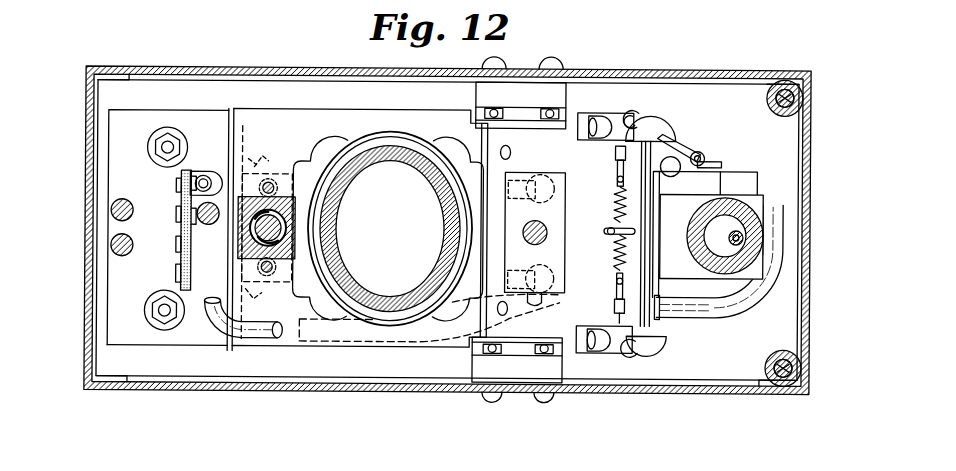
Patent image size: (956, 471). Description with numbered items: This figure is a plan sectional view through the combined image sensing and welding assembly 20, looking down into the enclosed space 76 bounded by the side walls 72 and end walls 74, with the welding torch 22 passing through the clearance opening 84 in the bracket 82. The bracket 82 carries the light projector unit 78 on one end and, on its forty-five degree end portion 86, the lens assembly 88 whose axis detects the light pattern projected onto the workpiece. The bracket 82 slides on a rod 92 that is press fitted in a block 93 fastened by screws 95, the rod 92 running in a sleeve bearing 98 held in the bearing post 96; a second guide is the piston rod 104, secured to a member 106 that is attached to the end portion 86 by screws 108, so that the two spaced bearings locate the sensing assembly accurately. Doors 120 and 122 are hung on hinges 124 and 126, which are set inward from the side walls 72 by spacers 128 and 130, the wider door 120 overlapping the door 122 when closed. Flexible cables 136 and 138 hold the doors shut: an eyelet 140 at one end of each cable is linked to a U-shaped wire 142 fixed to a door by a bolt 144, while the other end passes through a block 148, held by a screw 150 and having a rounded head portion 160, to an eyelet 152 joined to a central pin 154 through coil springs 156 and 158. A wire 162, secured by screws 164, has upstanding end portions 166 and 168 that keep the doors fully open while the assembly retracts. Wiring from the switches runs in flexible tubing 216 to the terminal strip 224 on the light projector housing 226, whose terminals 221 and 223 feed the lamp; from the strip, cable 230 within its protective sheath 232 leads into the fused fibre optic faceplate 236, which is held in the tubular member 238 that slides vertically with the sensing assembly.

The combined image sensing and welding assembly 20 is at (66, 82).
The welding torch 22 is at (386, 330).
The side walls 72 is at (742, 71).
The end walls 74 is at (92, 276).
The enclosed space 76 is at (114, 360).
The light projector unit 78 is at (160, 110).
The bracket 82 is at (305, 108).
The clearance opening 84 is at (387, 132).
The 45 degree end portion 86 is at (650, 282).
The lens assembly 88 is at (746, 170).
The rod 92 is at (276, 231).
The block 93 is at (280, 181).
The screws 95 is at (277, 191).
The bearing post 96 is at (246, 236).
The sleeve bearing 98 is at (282, 218).
The piston rod 104 is at (523, 232).
The member 106 is at (520, 171).
The screws 108 is at (470, 187).
The door 120 is at (780, 328).
The door 122 is at (790, 150).
The hinge 124 is at (520, 352).
The hinge 126 is at (525, 110).
The spacer 128 is at (476, 364).
The spacer 130 is at (472, 84).
The flexible cable 136 is at (614, 113).
The flexible cable 138 is at (642, 352).
The eyelet 140 is at (701, 156).
The U-shaped wire 142 is at (722, 163).
The bolt 144 is at (674, 162).
The block 148 is at (666, 112).
The screw 150 is at (594, 114).
The eyelet 152 is at (614, 159).
The central pin 154 is at (609, 230).
The coil spring 156 is at (614, 205).
The coil spring 158 is at (614, 252).
The rounded head portion 160 is at (640, 110).
The wire 162 is at (228, 110).
The screws 164 is at (262, 154).
The upstanding end portion 166 is at (242, 352).
The upstanding end portion 168 is at (247, 108).
The flexible tubing 216 is at (203, 176).
The terminal 221 is at (166, 150).
The terminal 223 is at (165, 314).
The terminal strip 224 is at (180, 234).
The light projector housing 226 is at (120, 306).
The cable 230 is at (215, 324).
The protective sheath 232 is at (700, 312).
The fused fibre optic faceplate 236 is at (762, 194).
The tubular member 238 is at (760, 206).